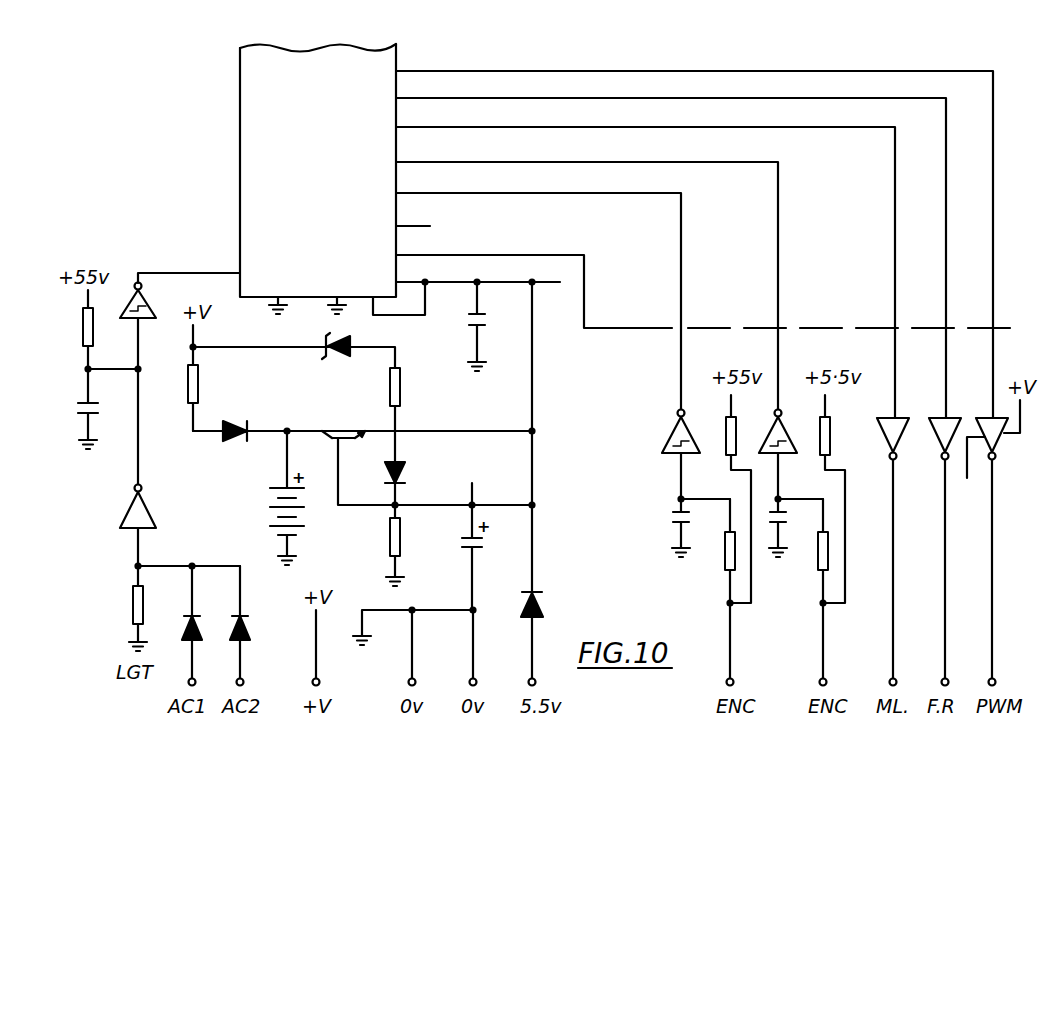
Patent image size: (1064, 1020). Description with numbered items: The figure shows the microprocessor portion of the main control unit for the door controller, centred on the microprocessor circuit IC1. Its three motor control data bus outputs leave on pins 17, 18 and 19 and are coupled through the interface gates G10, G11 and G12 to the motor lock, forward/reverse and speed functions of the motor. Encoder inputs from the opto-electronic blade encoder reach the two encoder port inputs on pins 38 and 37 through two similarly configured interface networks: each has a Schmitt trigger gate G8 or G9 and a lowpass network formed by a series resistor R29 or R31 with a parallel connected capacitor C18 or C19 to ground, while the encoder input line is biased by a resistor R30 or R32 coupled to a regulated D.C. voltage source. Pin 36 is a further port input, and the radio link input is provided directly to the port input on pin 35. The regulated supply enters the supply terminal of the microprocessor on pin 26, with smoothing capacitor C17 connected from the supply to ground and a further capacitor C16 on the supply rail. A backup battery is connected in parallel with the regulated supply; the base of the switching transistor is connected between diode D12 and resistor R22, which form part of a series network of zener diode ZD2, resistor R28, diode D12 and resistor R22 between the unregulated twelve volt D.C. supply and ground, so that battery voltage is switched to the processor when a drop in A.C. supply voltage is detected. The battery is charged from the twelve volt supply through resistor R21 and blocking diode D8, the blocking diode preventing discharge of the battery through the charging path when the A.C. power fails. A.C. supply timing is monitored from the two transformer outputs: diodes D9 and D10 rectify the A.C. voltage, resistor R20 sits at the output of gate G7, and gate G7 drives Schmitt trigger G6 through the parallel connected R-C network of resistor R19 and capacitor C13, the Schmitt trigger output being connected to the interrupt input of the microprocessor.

The microprocessor circuit IC1 is at (395, 181).
The resistor R19 is at (108, 329).
The capacitor C13 is at (104, 409).
The Schmitt trigger G6 is at (152, 301).
The gate G7 is at (153, 507).
The resistor R20 is at (156, 608).
The diode D9 is at (202, 626).
The diode D10 is at (256, 626).
The resistor R21 is at (213, 389).
The blocking diode D8 is at (362, 444).
The zener diode ZD2 is at (335, 358).
The resistor R28 is at (415, 399).
The diode D12 is at (415, 468).
The resistor R22 is at (413, 545).
The capacitor C16 is at (495, 326).
The smoothing capacitor C17 is at (487, 546).
The Schmitt trigger gate G8 is at (671, 432).
The resistor R30 is at (752, 499).
The capacitor C18 is at (696, 528).
The series resistor R29 is at (716, 551).
The Schmitt trigger gate G9 is at (787, 432).
The resistor R32 is at (846, 499).
The capacitor C19 is at (793, 528).
The series resistor R31 is at (809, 551).
The interface gate G10 is at (906, 428).
The interface gate G11 is at (958, 428).
The interface gate G12 is at (1002, 439).
The IC1 pin DB5 17 is at (694, 234).
The IC1 pin DB6 18 is at (671, 247).
The IC1 pin DB7 19 is at (645, 261).
The IC1 pin P27 38 is at (587, 275).
The IC1 pin P26 37 is at (538, 290).
The IC1 pin P25 36 is at (413, 215).
The IC1 pin P24 35 is at (723, 296).
The IC1 pin Vdd 26 is at (478, 273).